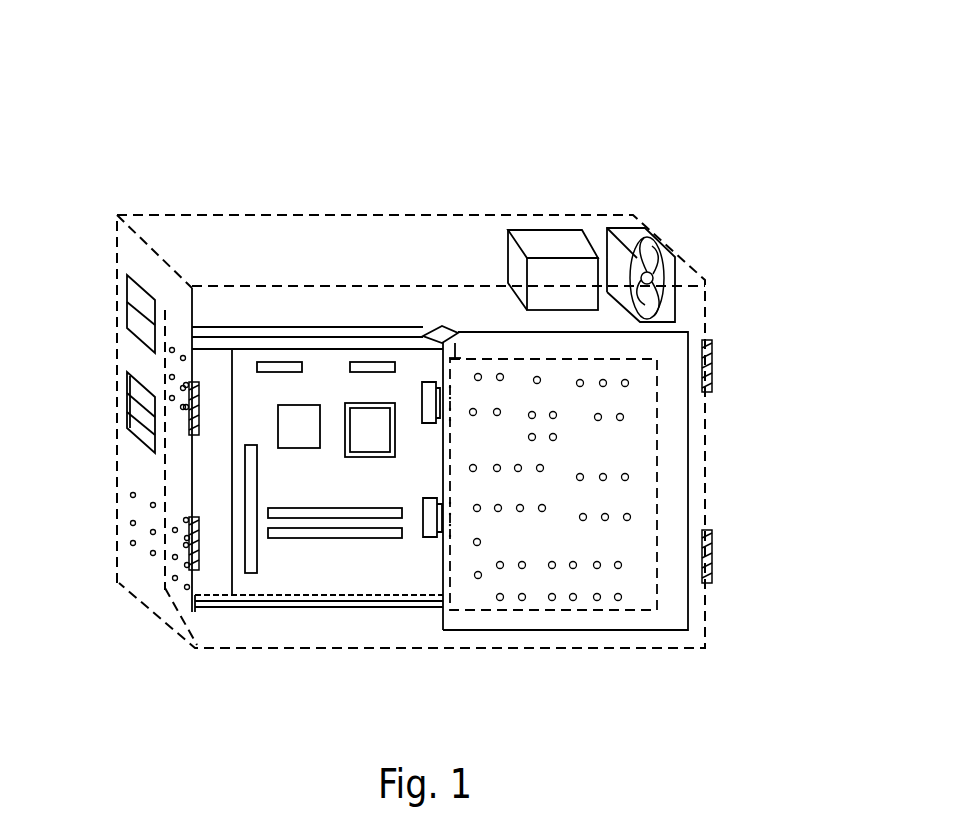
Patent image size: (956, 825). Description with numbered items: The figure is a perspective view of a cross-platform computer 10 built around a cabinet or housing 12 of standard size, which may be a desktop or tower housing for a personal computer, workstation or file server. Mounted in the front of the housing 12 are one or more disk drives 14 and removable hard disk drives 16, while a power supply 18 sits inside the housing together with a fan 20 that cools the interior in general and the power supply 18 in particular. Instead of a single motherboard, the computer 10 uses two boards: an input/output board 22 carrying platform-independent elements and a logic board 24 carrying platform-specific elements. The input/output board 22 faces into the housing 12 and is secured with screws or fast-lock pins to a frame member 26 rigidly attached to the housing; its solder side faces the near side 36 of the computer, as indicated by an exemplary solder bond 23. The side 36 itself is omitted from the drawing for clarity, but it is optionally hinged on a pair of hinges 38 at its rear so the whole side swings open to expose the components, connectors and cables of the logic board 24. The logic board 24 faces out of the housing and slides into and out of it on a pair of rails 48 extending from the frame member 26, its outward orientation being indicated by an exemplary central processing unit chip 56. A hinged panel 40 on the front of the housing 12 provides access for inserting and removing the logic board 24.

The computer 10 is at (107, 85).
The housing 12 is at (135, 215).
The disk drives 14 is at (137, 318).
The removable hard disk drives 16 is at (123, 397).
The power supply 18 is at (558, 248).
The fan 20 is at (632, 238).
The input/output (I/O) board 22 is at (484, 606).
The solder bond 23 is at (598, 567).
The logic board 24 is at (306, 574).
The frame member 26 is at (467, 342).
The side 36 is at (340, 305).
The hinges 38 is at (712, 392).
The hinged panel 40 is at (178, 593).
The rails 48 is at (303, 338).
The central processing unit chip 56 is at (372, 437).